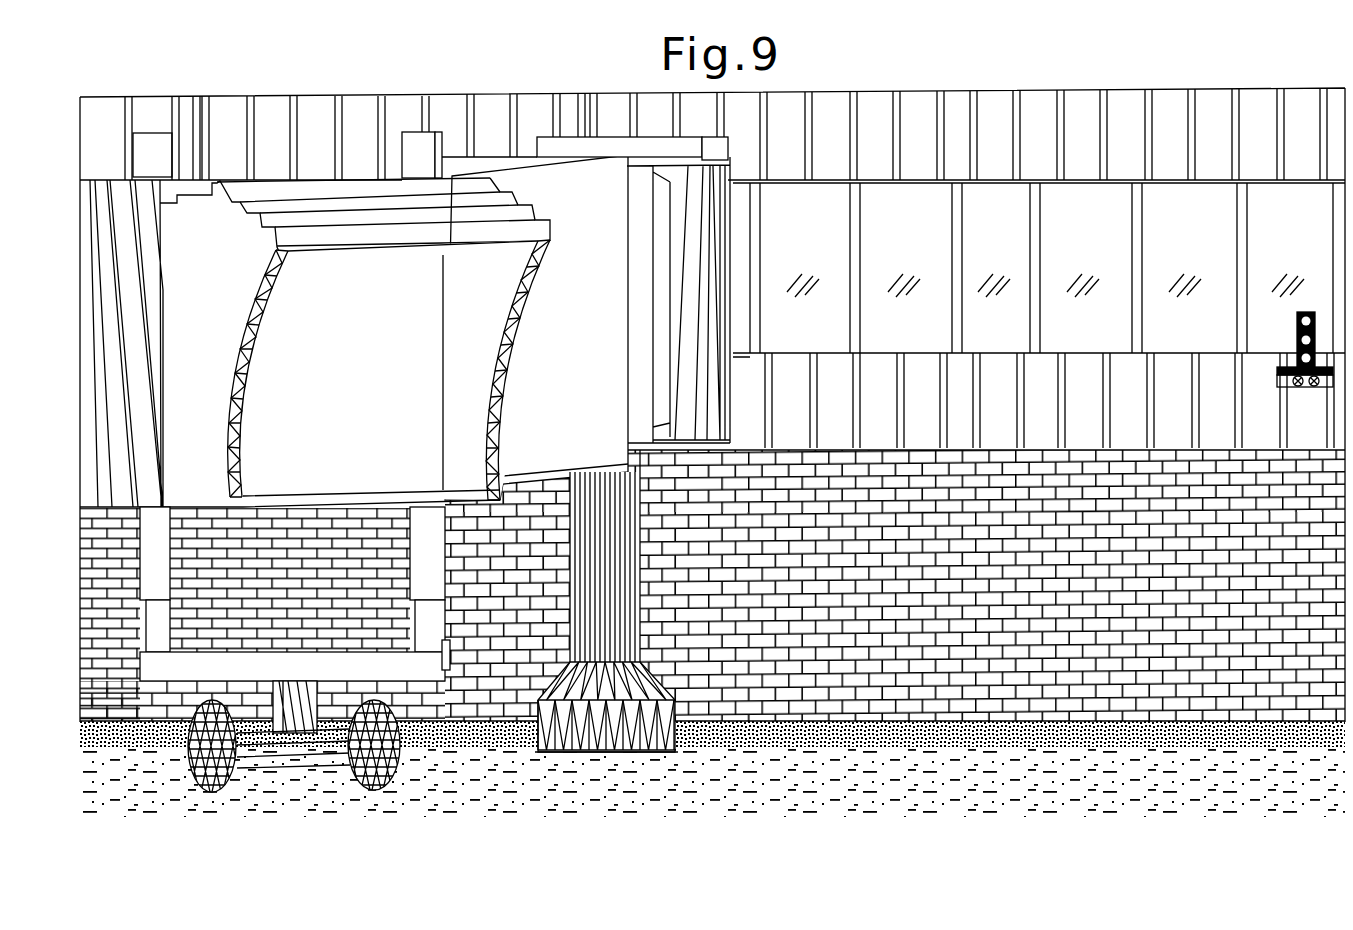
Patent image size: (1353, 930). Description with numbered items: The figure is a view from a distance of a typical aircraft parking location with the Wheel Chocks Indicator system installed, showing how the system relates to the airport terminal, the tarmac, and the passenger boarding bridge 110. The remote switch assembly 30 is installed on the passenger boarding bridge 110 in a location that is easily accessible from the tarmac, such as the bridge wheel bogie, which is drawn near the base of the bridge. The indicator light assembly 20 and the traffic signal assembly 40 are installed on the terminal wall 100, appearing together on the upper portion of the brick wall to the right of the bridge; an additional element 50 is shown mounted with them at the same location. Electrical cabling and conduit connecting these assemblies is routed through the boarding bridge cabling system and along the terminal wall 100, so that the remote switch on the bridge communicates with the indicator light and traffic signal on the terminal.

The indicator light assembly 20 is at (1277, 389).
The remote switch assembly 30 is at (455, 658).
The traffic signal assembly 40 is at (1291, 305).
The mounting bar 50 is at (1278, 369).
The terminal wall 100 is at (868, 578).
The passenger boarding bridge 110 is at (307, 426).